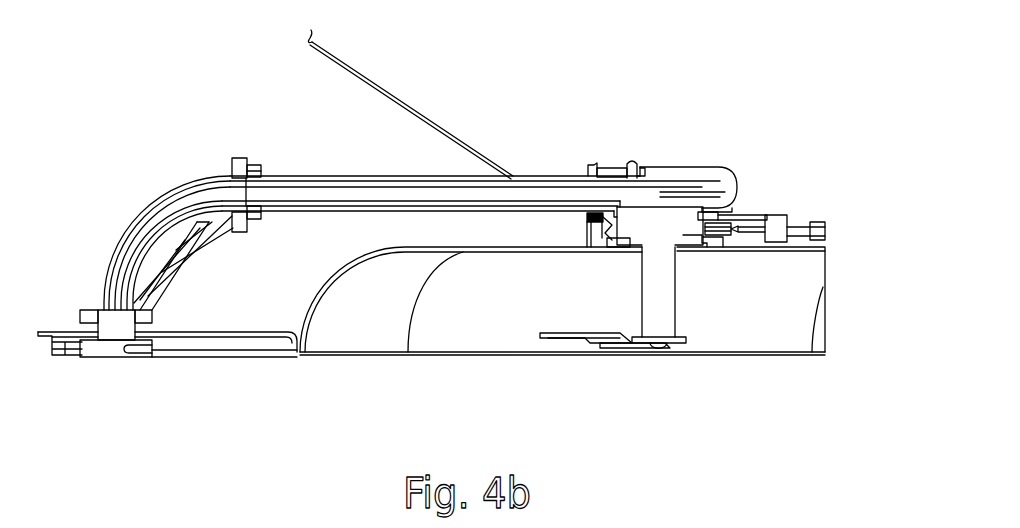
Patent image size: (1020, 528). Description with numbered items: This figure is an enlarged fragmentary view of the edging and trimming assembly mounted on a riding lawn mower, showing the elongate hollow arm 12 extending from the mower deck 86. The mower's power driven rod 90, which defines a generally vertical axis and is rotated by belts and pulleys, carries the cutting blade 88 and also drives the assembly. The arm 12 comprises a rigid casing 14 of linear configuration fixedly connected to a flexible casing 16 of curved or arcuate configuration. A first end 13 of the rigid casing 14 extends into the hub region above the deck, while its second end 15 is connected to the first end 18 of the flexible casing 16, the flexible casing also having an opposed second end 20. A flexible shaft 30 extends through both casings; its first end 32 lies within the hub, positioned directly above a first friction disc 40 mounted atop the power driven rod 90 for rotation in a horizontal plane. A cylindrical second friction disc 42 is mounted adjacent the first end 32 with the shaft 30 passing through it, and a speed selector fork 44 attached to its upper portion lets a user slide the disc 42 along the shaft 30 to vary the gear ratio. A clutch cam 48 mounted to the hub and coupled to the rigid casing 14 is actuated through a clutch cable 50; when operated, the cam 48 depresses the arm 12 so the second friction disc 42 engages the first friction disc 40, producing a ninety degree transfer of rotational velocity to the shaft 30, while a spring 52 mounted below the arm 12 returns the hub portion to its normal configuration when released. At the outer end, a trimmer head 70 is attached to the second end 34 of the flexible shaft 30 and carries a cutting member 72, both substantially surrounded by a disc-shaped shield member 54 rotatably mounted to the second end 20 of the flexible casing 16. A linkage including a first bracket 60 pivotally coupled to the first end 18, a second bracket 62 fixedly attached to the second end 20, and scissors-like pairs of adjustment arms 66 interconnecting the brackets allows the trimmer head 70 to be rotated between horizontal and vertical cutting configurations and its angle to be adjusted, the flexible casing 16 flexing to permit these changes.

The elongate hollow arm 12 is at (296, 110).
The first end of the rigid casing 13 is at (728, 173).
The rigid casing 14 is at (407, 175).
The second end of the rigid casing 15 is at (262, 211).
The flexible casing 16 is at (193, 180).
The first end of the flexible casing 18 is at (250, 223).
The second end of the flexible casing 20 is at (130, 297).
The flexible shaft 30 is at (328, 190).
The first end of the flexible shaft 32 is at (726, 192).
The second end of the flexible shaft 34 is at (112, 315).
The first friction disc 40 is at (660, 215).
The second friction disc 42 is at (640, 168).
The speed selector fork 44 is at (633, 158).
The clutch cam 48 is at (591, 162).
The clutch cable 50 is at (370, 73).
The spring 52 is at (587, 222).
The shield member 54 is at (212, 357).
The first bracket 60 is at (236, 158).
The second bracket 62 is at (82, 315).
The adjustment arms 66 is at (200, 265).
The trimmer head 70 is at (88, 358).
The cutting member 72 is at (142, 358).
The mower deck 86 is at (358, 354).
The cutting blade 88 is at (573, 339).
The power driven rod 90 is at (680, 317).